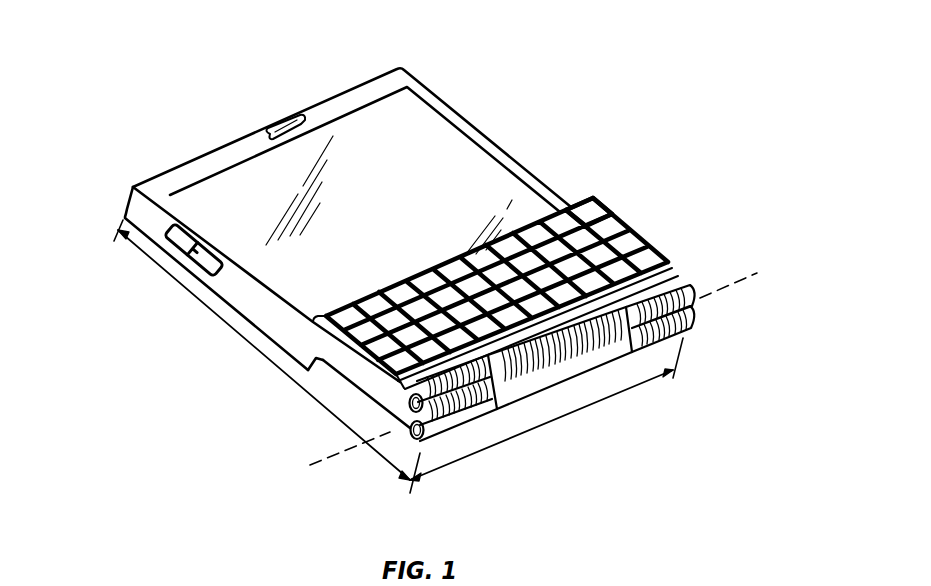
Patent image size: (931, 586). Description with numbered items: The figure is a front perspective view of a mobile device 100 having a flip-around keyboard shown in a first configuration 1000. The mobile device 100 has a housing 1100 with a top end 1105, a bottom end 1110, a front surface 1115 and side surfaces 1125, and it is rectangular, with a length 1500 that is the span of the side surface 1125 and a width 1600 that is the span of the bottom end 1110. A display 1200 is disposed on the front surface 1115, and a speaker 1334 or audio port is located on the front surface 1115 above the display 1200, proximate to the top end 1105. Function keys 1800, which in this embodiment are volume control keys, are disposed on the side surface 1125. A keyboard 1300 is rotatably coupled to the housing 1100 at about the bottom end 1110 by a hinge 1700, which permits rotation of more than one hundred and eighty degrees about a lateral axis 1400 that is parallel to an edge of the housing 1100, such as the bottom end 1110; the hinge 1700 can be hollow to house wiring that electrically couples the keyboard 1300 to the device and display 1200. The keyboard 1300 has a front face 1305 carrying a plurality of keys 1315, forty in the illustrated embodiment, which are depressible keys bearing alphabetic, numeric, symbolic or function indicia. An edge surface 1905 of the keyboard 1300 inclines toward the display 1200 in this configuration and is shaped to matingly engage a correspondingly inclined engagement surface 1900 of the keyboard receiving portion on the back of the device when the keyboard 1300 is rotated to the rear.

The mobile device 100 is at (162, 54).
The first configuration 1000 is at (582, 73).
The housing 1100 is at (160, 188).
The top end 1105 is at (131, 189).
The front surface 1115 is at (386, 80).
The speaker 1334 is at (283, 124).
The display 1200 is at (471, 165).
The keyboard 1300 is at (378, 373).
The keys 1315 is at (598, 211).
The front face 1305 is at (670, 284).
The lateral axis 1400 is at (733, 284).
The function keys 1800 is at (176, 243).
The length 1500 is at (188, 292).
The side surfaces 1125 is at (243, 298).
The edge surface 1905 is at (282, 348).
The engagement surface 1900 is at (318, 368).
The bottom end 1110 is at (468, 422).
The hinge 1700 is at (560, 370).
The width 1600 is at (653, 377).